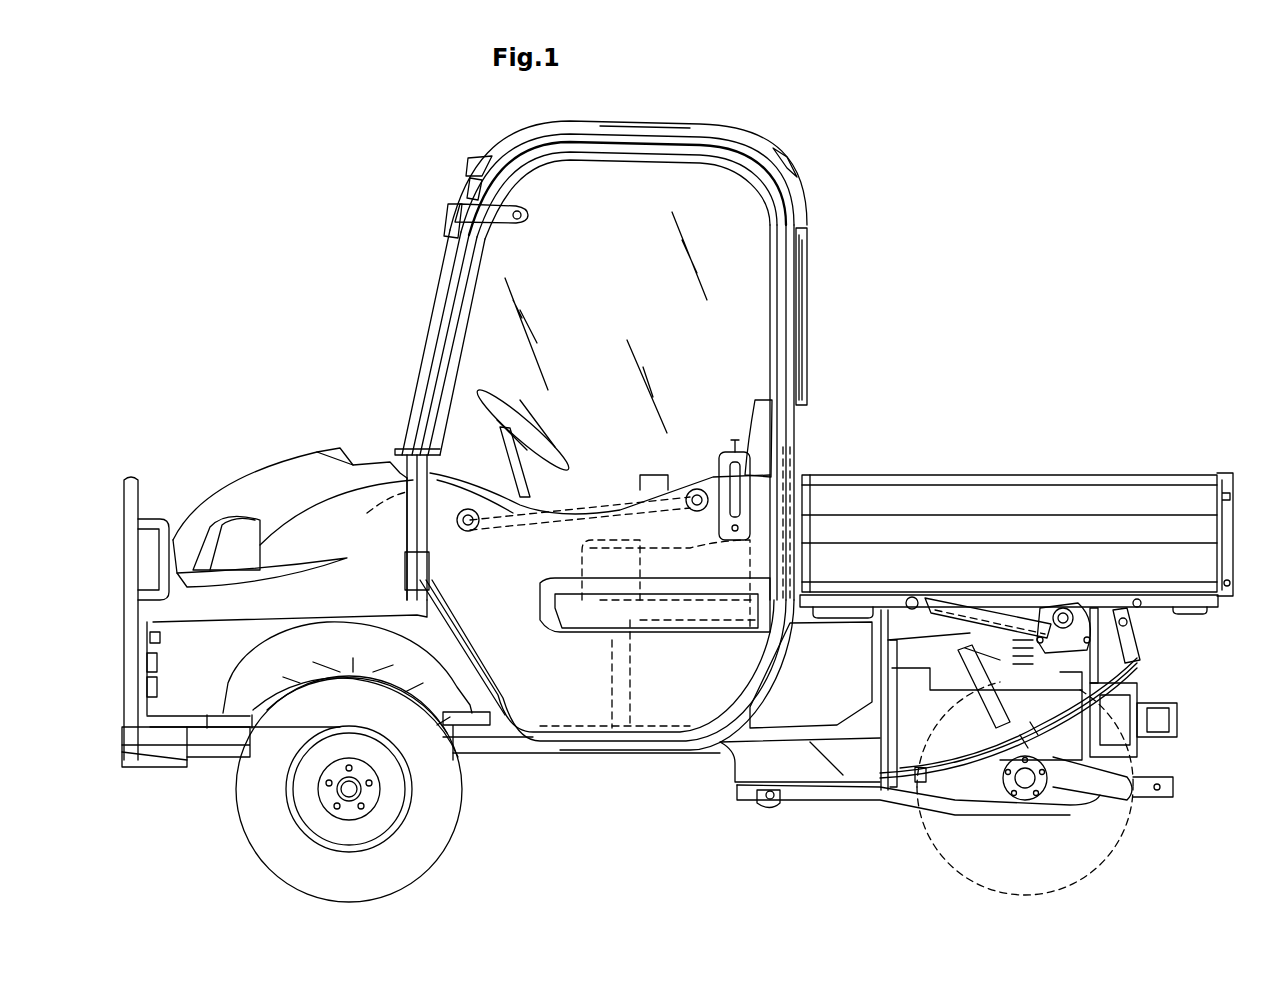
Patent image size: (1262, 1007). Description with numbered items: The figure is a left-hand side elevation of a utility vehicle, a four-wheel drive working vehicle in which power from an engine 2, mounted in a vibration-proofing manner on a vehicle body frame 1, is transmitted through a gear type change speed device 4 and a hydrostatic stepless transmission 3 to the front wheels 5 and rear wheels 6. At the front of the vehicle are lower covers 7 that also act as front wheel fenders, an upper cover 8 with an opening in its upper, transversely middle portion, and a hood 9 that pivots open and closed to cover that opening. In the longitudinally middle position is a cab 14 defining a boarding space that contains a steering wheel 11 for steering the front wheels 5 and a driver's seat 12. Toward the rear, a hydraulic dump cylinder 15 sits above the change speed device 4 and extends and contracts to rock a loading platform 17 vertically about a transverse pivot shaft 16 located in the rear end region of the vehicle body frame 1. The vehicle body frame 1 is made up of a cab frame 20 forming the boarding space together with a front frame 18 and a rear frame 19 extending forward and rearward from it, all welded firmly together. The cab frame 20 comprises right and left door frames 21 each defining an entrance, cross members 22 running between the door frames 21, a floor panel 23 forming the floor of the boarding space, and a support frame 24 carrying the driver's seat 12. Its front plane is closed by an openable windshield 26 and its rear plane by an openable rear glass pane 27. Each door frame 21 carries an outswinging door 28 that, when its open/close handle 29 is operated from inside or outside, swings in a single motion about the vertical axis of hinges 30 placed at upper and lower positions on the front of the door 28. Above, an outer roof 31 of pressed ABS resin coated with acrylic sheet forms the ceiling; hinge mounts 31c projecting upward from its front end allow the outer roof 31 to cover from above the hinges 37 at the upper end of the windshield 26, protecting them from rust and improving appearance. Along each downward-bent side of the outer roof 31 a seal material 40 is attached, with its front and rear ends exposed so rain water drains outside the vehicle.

The vehicle body frame 1 is at (660, 752).
The engine 2 is at (890, 655).
The hydrostatic stepless transmission 3 is at (1177, 722).
The gear type change speed device 4 is at (950, 790).
The front wheels 5 is at (250, 830).
The rear wheels 6 is at (1130, 820).
The lower covers 7 is at (210, 708).
The upper cover 8 is at (323, 493).
The hood 9 is at (205, 512).
The steering wheel 11 is at (510, 400).
The driver's seat 12 is at (590, 546).
The cab 14 is at (792, 148).
The hydraulic dump cylinder 15 is at (945, 600).
The pivot shaft 16 is at (1138, 600).
The loading platform 17 is at (990, 477).
The front frame 18 is at (470, 750).
The rear frame 19 is at (1140, 630).
The cab frame 20 is at (795, 288).
The door frames 21 is at (770, 655).
The cross members 22 is at (395, 500).
The floor panel 23 is at (575, 715).
The support frame 24 is at (612, 668).
The windshield 26 is at (420, 358).
The rear glass pane 27 is at (808, 357).
The doors 28 is at (480, 318).
The open/close handle 29 is at (725, 450).
The hinges 30 is at (498, 220).
The outer roof 31 is at (690, 121).
The hinge mounts 31c is at (476, 158).
The hinges 37 is at (470, 186).
The seal material 40 is at (636, 134).